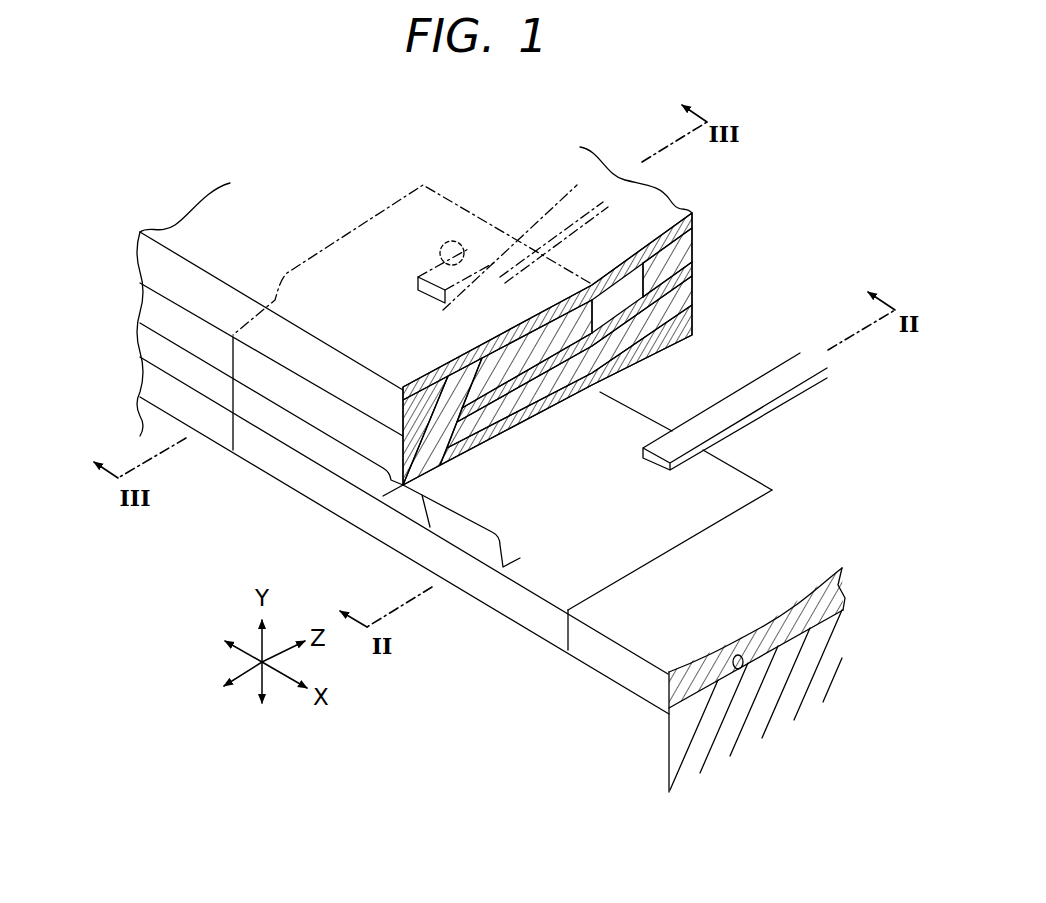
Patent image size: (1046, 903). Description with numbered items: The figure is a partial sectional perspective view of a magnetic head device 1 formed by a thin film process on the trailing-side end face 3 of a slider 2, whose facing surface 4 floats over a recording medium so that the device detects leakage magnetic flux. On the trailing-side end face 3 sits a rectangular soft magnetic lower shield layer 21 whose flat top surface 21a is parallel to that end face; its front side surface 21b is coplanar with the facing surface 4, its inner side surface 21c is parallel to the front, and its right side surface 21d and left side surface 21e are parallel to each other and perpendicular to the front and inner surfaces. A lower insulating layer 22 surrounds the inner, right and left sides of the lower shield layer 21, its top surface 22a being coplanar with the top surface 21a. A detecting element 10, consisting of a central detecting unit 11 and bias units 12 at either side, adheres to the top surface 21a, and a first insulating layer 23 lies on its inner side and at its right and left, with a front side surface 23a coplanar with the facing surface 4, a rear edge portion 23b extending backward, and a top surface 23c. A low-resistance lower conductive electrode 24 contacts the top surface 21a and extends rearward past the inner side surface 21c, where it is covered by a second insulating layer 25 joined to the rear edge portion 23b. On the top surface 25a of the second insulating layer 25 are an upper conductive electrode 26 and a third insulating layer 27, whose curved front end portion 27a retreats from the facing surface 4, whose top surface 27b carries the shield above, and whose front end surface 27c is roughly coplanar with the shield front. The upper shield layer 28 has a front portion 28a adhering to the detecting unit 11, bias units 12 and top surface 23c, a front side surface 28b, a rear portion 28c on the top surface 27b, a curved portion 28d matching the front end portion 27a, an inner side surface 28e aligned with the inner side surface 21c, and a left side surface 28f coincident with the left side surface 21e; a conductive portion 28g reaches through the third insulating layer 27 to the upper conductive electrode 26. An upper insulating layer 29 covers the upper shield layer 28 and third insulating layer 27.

The magnetic head device 1 is at (468, 166).
The slider 2 is at (818, 677).
The trailing-side end face 3 is at (740, 668).
The facing surface 4 is at (656, 757).
The detecting element 10 is at (383, 504).
The detecting unit 11 is at (405, 497).
The bias units 12 is at (335, 456).
The lower shield layer 21 is at (512, 598).
The top surface 21a is at (582, 600).
The front side surface 21b is at (278, 470).
The inner side surface 21c is at (742, 470).
The right side surface 21d is at (655, 565).
The left side surface 21e is at (226, 432).
The lower insulating layer 22 is at (170, 400).
The top surface 22a is at (843, 601).
The first insulating layer 23 is at (162, 345).
The front side surface 23a is at (182, 372).
The rear edge portion 23b is at (520, 450).
The top surface 23c is at (140, 300).
The lower conductive electrode 24 is at (740, 400).
The second insulating layer 25 is at (645, 360).
The top surface 25a is at (690, 302).
The upper conductive electrode 26 is at (553, 212).
The third insulating layer 27 is at (185, 298).
The front end portion 27a is at (535, 425).
The top surface 27b is at (690, 252).
The front end surface 27c is at (193, 330).
The upper shield layer 28 is at (465, 376).
The front portion 28a is at (396, 402).
The front side surface 28b is at (290, 386).
The rear portion 28c is at (515, 342).
The curved portion 28d is at (390, 370).
The inner side surface 28e is at (605, 300).
The left side surface 28f is at (222, 345).
The conductive portion 28g is at (440, 265).
The upper insulating layer 29 is at (640, 235).